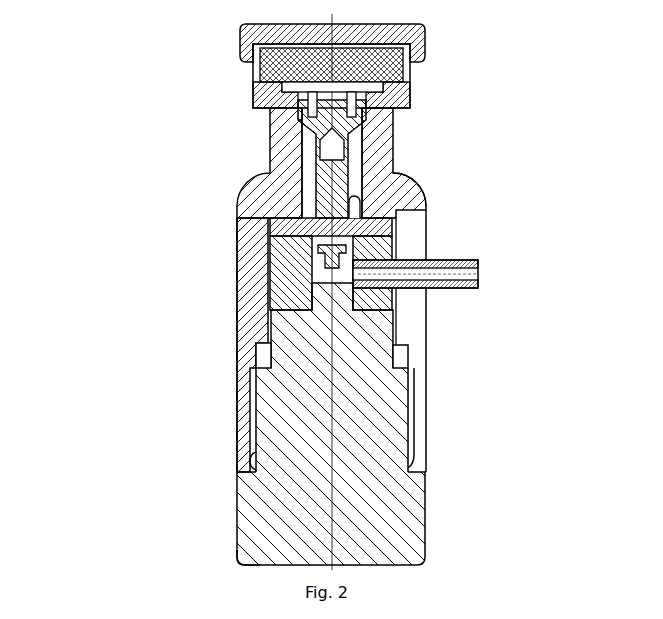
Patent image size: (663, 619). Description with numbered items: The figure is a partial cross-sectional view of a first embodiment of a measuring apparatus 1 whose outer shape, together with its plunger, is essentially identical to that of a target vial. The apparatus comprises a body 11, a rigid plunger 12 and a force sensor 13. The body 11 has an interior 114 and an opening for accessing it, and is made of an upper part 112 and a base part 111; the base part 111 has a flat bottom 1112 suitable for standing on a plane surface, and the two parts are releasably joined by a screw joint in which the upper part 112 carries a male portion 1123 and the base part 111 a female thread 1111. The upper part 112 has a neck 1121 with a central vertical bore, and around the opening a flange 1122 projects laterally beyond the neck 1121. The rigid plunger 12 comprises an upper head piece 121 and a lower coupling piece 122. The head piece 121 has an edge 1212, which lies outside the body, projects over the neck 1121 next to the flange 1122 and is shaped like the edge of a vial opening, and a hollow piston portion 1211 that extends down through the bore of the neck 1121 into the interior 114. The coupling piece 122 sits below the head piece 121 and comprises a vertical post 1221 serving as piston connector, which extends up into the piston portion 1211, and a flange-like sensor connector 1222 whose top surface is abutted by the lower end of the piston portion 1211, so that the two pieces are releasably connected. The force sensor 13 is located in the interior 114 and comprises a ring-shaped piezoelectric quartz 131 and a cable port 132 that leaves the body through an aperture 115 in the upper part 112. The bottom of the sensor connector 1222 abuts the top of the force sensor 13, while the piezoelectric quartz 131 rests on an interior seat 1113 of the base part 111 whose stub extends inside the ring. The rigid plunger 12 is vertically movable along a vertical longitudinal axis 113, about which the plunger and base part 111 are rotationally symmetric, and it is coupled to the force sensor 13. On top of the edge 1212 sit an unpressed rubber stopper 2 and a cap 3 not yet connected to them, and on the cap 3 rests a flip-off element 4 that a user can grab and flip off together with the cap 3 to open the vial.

The measuring apparatus 1 is at (157, 117).
The rubber stopper 2 is at (285, 63).
The cap 3 is at (280, 85).
The flip-off element 4 is at (420, 32).
The body 11 is at (185, 372).
The rigid plunger 12 is at (391, 181).
The force sensor 13 is at (411, 302).
The base part 111 is at (224, 497).
The upper part 112 is at (226, 298).
The vertical longitudinal axis 113 is at (332, 428).
The interior 114 is at (268, 222).
The aperture 115 is at (413, 352).
The head piece 121 is at (380, 133).
The coupling piece 122 is at (411, 228).
The piezoelectric quartz 131 is at (285, 277).
The cable port 132 is at (443, 263).
The female thread 1111 is at (403, 470).
The flat bottom 1112 is at (245, 565).
The interior seat 1113 is at (380, 328).
The neck 1121 is at (282, 162).
The flange 1122 is at (272, 128).
The male portion 1123 is at (251, 461).
The piston portion 1211 is at (387, 163).
The edge 1212 is at (408, 95).
The post 1221 is at (410, 207).
The sensor connector 1222 is at (350, 227).